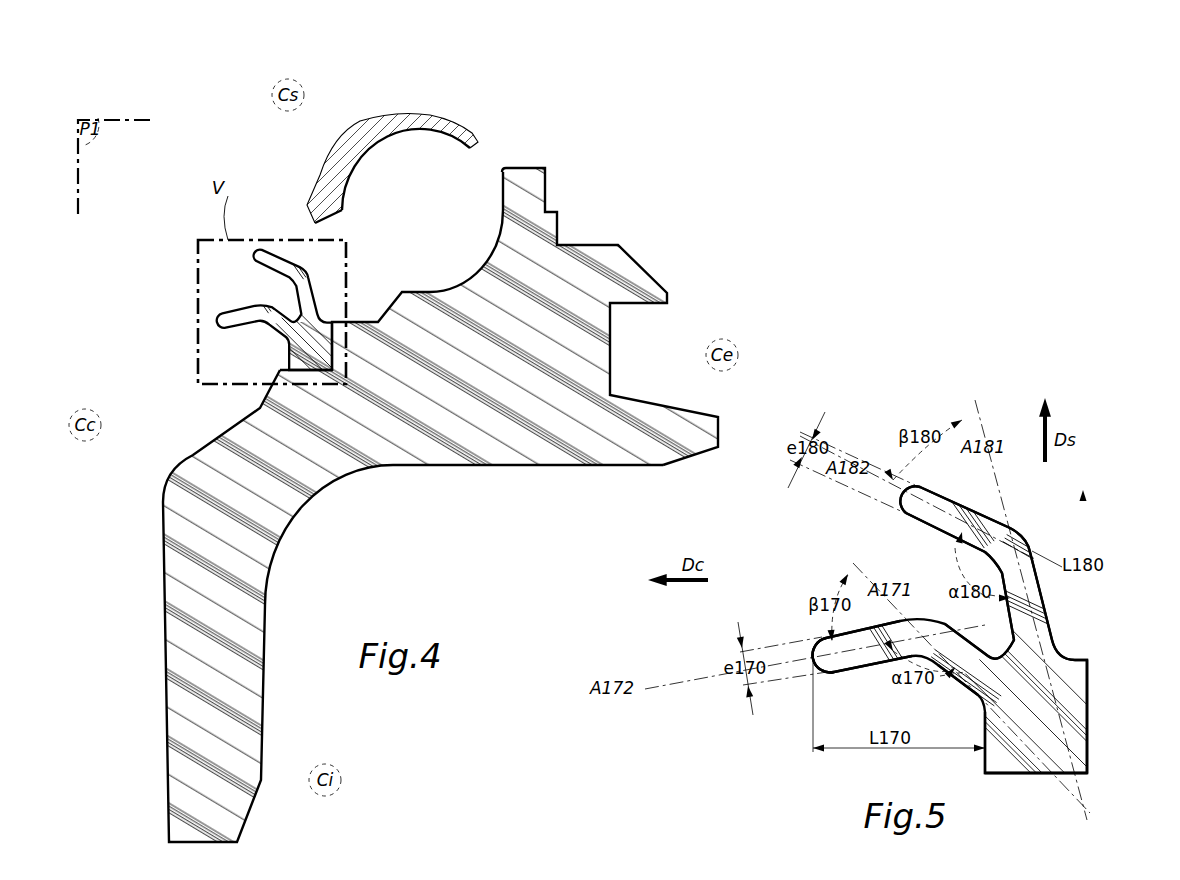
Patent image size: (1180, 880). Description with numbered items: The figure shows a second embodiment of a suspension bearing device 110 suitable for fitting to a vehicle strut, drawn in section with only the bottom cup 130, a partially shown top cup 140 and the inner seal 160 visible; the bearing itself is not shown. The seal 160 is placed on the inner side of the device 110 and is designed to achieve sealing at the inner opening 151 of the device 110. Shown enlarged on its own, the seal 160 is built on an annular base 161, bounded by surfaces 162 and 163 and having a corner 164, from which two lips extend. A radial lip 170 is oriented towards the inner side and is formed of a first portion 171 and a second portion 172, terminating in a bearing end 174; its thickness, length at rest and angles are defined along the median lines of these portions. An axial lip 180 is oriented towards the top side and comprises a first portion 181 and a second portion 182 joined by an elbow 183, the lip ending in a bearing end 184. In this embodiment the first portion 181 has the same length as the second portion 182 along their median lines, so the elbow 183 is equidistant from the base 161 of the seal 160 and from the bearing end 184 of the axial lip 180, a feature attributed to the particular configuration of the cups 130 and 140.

In FIG. 4, the suspension bearing device 110 is at (652, 194).
In FIG. 4, the bottom cup 130 is at (497, 425).
In FIG. 4, the top cup 140 is at (480, 141).
In FIG. 4, the inner opening 151 is at (158, 457).
In FIG. 4, the inner seal 160 is at (312, 358).
In FIG. 5, the inner seal 160 is at (942, 585).
In FIG. 5, the radial lip 170 is at (856, 622).
In FIG. 5, the first portion of the radial lip 171 is at (960, 688).
In FIG. 5, the second portion of the radial lip 172 is at (857, 658).
In FIG. 5, the bearing end of the radial lip 174 is at (811, 672).
In FIG. 5, the axial lip 180 is at (989, 496).
In FIG. 5, the first portion of the axial lip 181 is at (1085, 648).
In FIG. 5, the second portion of the axial lip 182 is at (940, 529).
In FIG. 5, the elbow of the axial lip 183 is at (1036, 534).
In FIG. 5, the bearing end of the axial lip 184 is at (890, 497).
In FIG. 5, the annular base 161 is at (1074, 690).
In FIG. 5, the surface of the annular base 162 is at (1097, 749).
In FIG. 5, the surface of the annular base 163 is at (1030, 782).
In FIG. 5, the corner 164 is at (1008, 660).